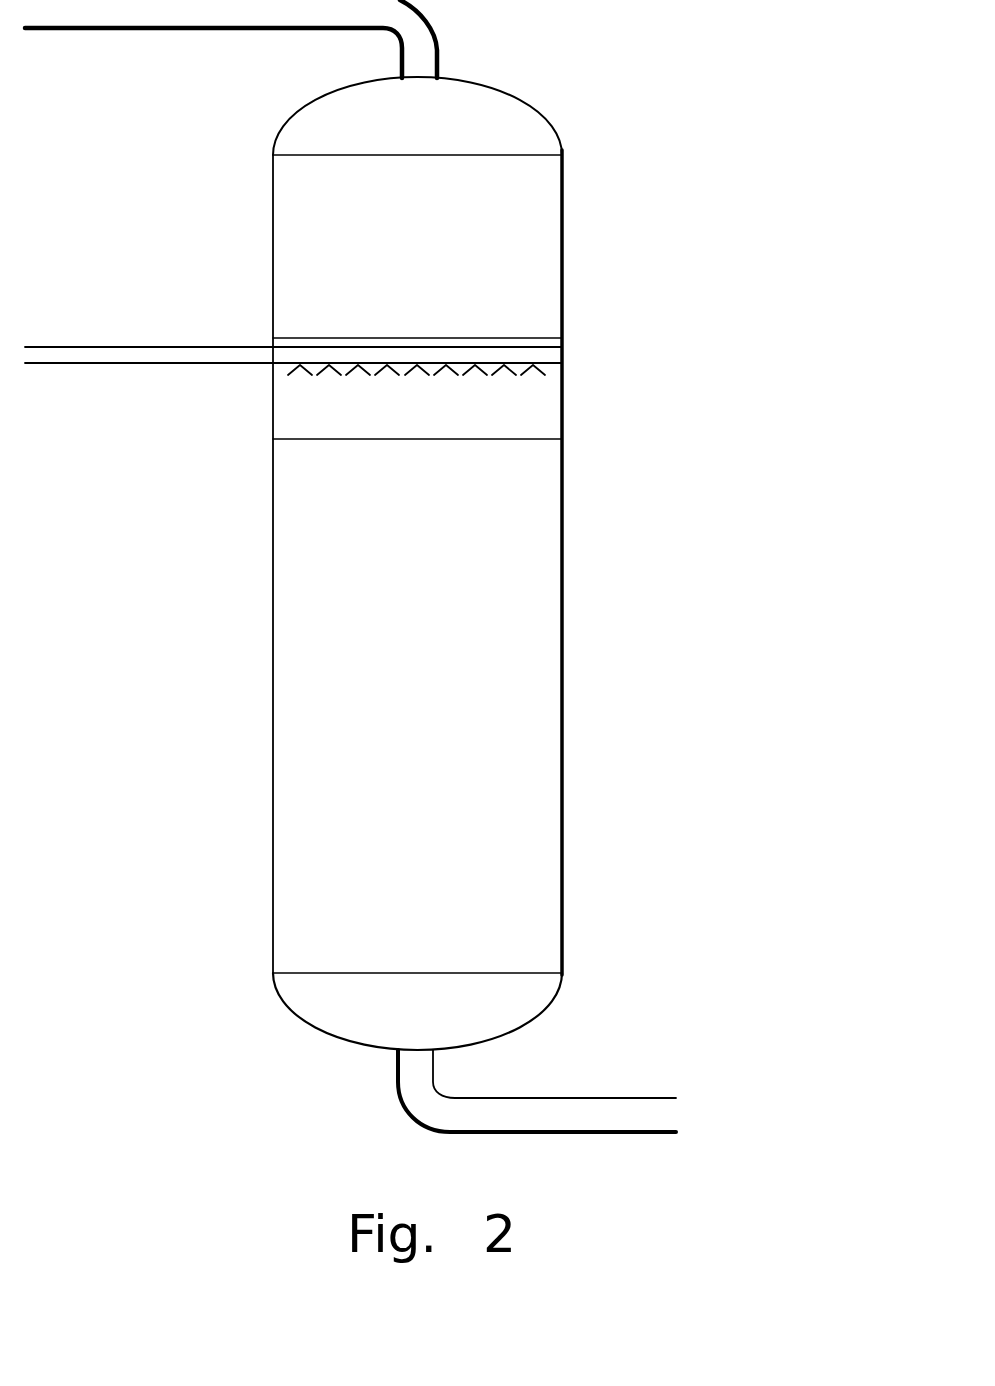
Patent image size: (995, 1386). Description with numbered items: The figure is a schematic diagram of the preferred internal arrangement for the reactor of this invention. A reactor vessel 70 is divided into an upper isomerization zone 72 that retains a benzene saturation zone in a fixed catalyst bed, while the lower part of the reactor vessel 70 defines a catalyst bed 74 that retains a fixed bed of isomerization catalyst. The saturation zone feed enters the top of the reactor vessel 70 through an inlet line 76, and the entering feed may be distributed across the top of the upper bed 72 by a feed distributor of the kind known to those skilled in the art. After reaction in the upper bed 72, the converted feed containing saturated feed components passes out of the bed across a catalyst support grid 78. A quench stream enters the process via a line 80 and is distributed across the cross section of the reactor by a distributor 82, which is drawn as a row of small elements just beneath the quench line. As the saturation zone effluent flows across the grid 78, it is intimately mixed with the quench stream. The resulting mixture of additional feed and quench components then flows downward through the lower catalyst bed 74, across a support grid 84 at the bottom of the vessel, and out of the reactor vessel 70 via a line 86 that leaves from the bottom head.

The reactor vessel 70 is at (563, 592).
The upper isomerization zone 72 is at (538, 288).
The catalyst bed 74 is at (510, 734).
The inlet line 76 is at (439, 50).
The catalyst support grid 78 is at (538, 338).
The line 80 is at (148, 364).
The distributor 82 is at (505, 376).
The support grid 84 is at (528, 974).
The line 86 is at (517, 1098).